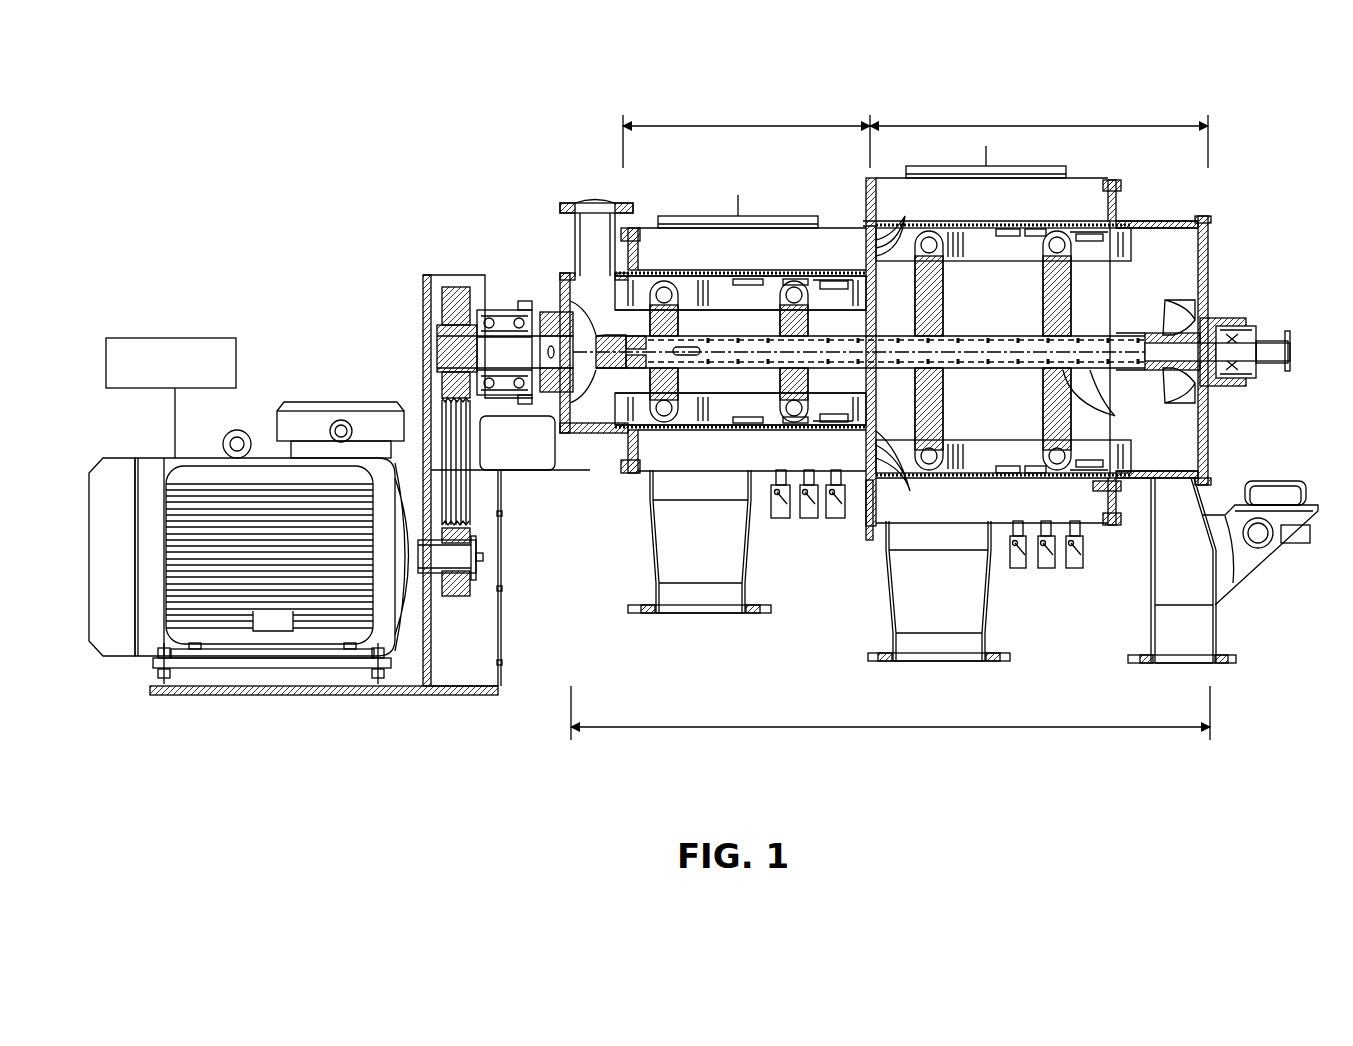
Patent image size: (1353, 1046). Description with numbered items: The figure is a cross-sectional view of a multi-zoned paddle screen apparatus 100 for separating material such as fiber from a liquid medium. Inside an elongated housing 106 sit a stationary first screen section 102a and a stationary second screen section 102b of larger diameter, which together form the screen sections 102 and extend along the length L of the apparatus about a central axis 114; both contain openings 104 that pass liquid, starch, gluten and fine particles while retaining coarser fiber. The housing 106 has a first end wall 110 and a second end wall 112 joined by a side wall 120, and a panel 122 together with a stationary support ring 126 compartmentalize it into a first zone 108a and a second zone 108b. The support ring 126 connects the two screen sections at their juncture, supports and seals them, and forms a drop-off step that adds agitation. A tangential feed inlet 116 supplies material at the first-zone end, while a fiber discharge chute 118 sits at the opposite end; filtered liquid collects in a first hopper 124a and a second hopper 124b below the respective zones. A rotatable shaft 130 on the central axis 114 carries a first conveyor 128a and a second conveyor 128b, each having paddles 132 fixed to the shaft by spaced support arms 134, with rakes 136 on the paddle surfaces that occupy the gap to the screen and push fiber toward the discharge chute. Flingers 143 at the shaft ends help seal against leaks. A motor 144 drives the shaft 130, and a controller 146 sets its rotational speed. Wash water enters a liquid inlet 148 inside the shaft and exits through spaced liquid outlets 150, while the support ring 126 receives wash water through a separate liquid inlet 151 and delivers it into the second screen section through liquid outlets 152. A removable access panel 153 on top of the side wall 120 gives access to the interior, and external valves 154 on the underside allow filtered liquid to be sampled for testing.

The apparatus 100 is at (338, 163).
The screen sections 102 is at (1022, 347).
The first screen section 102a is at (740, 330).
The second screen section 102b is at (1003, 350).
The openings 104 is at (960, 374).
The housing 106 is at (740, 328).
The first zone 108a is at (746, 132).
The second zone 108b is at (1039, 132).
The first end wall 110 is at (600, 366).
The second end wall 112 is at (1157, 336).
The central axis 114 is at (1244, 345).
The tangential feed inlet 116 is at (596, 221).
The fiber discharge chute 118 is at (1182, 589).
The side wall 120 is at (894, 188).
The panel 122 is at (889, 181).
The first hopper 124a is at (699, 562).
The second hopper 124b is at (939, 611).
The support ring 126 is at (927, 474).
The first conveyor 128a is at (931, 303).
The second conveyor 128b is at (923, 328).
The shaft 130 is at (1163, 350).
The paddles 132 is at (873, 322).
The support arms 134 is at (860, 350).
The rakes 136 is at (918, 372).
The flingers 143 is at (929, 358).
The motor 144 is at (249, 543).
The controller 146 is at (171, 376).
The liquid inlet 148 is at (1298, 351).
The liquid outlets 150 is at (1110, 399).
The liquid inlet 151 is at (865, 533).
The liquid outlets 152 is at (900, 223).
The removable access panel 153 is at (862, 181).
The external valves 154 is at (927, 545).
The length L is at (890, 723).